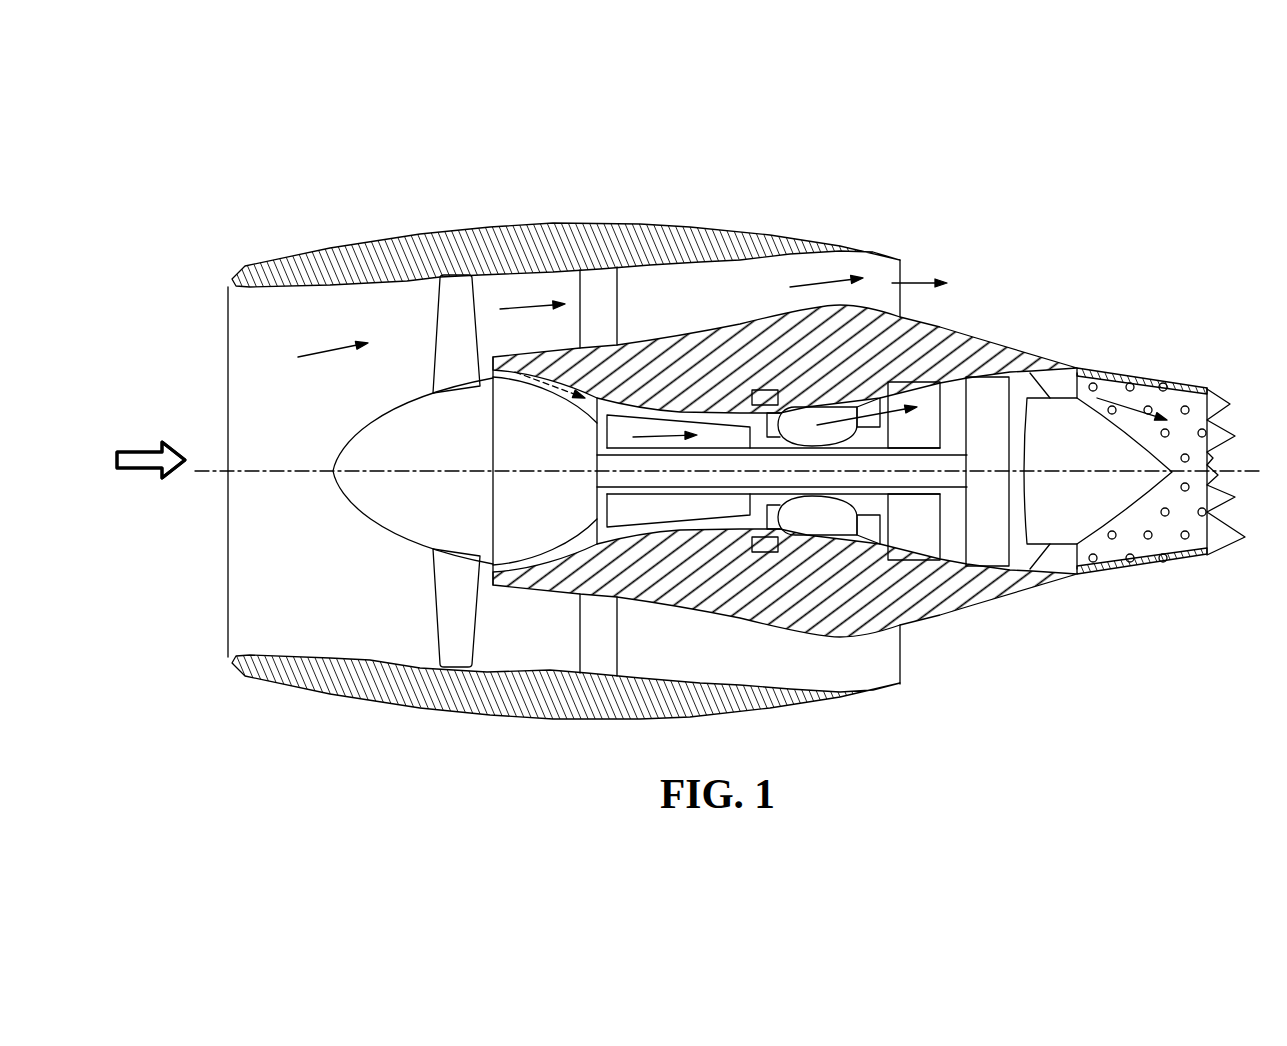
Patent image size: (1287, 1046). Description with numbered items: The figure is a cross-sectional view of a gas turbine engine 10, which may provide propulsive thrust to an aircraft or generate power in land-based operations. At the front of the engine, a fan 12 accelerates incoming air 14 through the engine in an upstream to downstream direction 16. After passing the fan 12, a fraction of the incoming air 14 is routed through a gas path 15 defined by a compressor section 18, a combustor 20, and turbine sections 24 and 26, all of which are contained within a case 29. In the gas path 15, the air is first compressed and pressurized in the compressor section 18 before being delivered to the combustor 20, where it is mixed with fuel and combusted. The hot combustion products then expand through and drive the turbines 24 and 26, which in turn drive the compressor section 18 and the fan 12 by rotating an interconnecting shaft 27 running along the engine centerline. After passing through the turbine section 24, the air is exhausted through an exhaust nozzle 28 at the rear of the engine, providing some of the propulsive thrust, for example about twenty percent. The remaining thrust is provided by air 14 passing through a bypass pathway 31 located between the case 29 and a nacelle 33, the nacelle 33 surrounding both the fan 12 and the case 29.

The gas turbine engine 10 is at (262, 140).
The fan 12 is at (453, 603).
The incoming air 14 is at (127, 470).
The upstream to downstream direction 16 is at (150, 470).
The compressor section 18 is at (713, 438).
The combustor 20 is at (840, 413).
The turbine section 24 is at (923, 537).
The turbine section 26 is at (990, 550).
The interconnecting shaft 27 is at (773, 482).
The exhaust nozzle 28 is at (1133, 377).
The case 29 is at (772, 355).
The bypass pathway 31 is at (317, 353).
The nacelle 33 is at (453, 243).
The gas path 15 is at (890, 398).